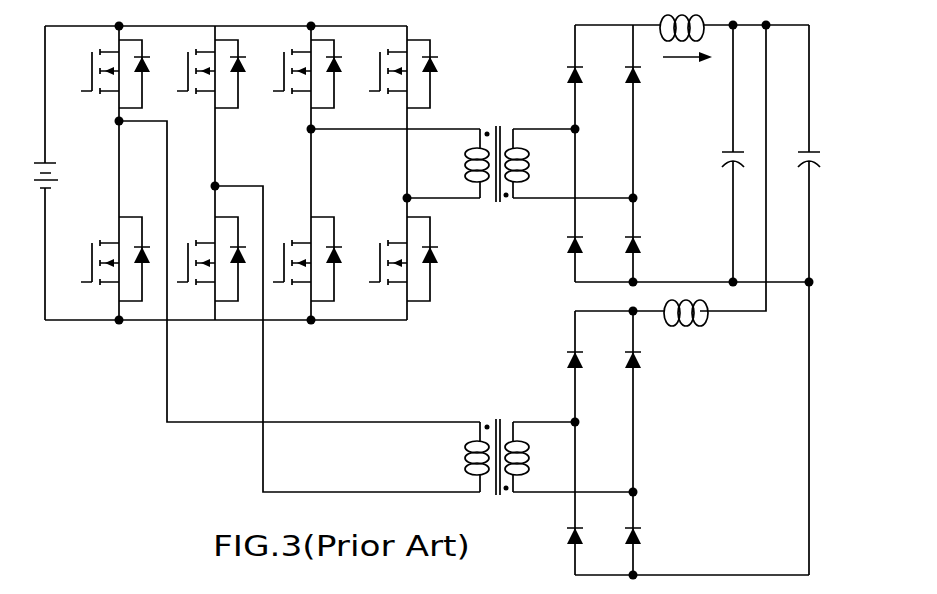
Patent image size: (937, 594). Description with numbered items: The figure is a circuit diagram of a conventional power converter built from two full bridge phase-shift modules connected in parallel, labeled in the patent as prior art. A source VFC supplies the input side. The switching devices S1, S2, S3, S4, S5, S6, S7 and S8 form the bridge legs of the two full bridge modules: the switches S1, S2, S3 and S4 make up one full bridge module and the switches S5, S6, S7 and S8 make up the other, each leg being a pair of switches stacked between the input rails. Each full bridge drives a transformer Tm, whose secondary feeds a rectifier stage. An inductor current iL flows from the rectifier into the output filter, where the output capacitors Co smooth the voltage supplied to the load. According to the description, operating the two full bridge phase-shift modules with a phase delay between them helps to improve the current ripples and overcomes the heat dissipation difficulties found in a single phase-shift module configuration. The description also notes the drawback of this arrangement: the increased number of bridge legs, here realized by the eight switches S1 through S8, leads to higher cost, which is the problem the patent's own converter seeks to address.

The switch S1 is at (115, 79).
The switch S2 is at (115, 263).
The switch S3 is at (211, 79).
The switch S4 is at (211, 263).
The switch S5 is at (307, 79).
The switch S6 is at (307, 263).
The switch S7 is at (403, 79).
The switch S8 is at (403, 263).
The fuel cell voltage source VFC is at (29, 176).
The transformer Tm is at (549, 153).
The inductor current iL is at (687, 67).
The output capacitor Co is at (759, 300).